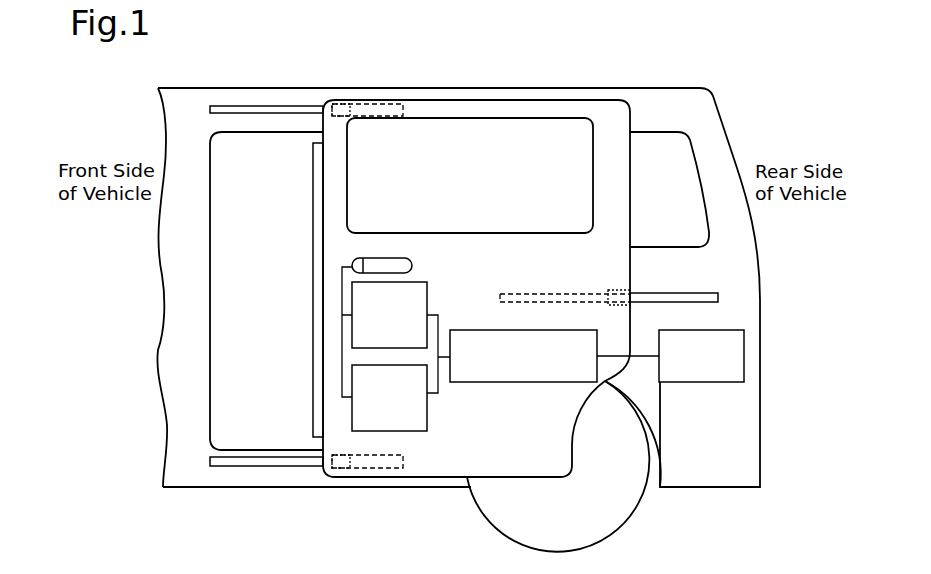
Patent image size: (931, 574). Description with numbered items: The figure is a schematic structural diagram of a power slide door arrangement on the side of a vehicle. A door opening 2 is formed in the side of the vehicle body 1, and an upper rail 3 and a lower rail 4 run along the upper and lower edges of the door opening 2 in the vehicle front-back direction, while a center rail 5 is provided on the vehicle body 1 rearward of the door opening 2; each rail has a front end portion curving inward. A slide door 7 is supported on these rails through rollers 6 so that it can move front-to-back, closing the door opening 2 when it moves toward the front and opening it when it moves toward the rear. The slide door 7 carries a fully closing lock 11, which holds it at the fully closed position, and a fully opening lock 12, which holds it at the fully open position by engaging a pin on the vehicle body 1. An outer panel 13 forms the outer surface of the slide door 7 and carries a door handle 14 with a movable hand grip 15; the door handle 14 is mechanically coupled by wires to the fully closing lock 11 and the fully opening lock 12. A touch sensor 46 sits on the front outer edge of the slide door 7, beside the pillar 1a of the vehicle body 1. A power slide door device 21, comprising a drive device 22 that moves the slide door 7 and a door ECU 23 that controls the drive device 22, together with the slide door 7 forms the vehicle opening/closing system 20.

The vehicle body 1 is at (708, 91).
The pillar 1a is at (173, 341).
The door opening 2 is at (216, 291).
The upper rail 3 is at (293, 107).
The lower rail 4 is at (272, 457).
The center rail 5 is at (696, 292).
The rollers 6 is at (344, 103).
The slide door 7 is at (622, 100).
The fully closing lock 11 is at (428, 411).
The fully opening lock 12 is at (428, 296).
The outer panel 13 is at (618, 172).
The door handle 14 is at (405, 258).
The hand grip 15 is at (376, 258).
The opening/closing system 20 is at (764, 96).
The power slide door device 21 is at (737, 311).
The drive device 22 is at (527, 383).
The door ECU 23 is at (706, 383).
The touch sensor 46 is at (315, 200).